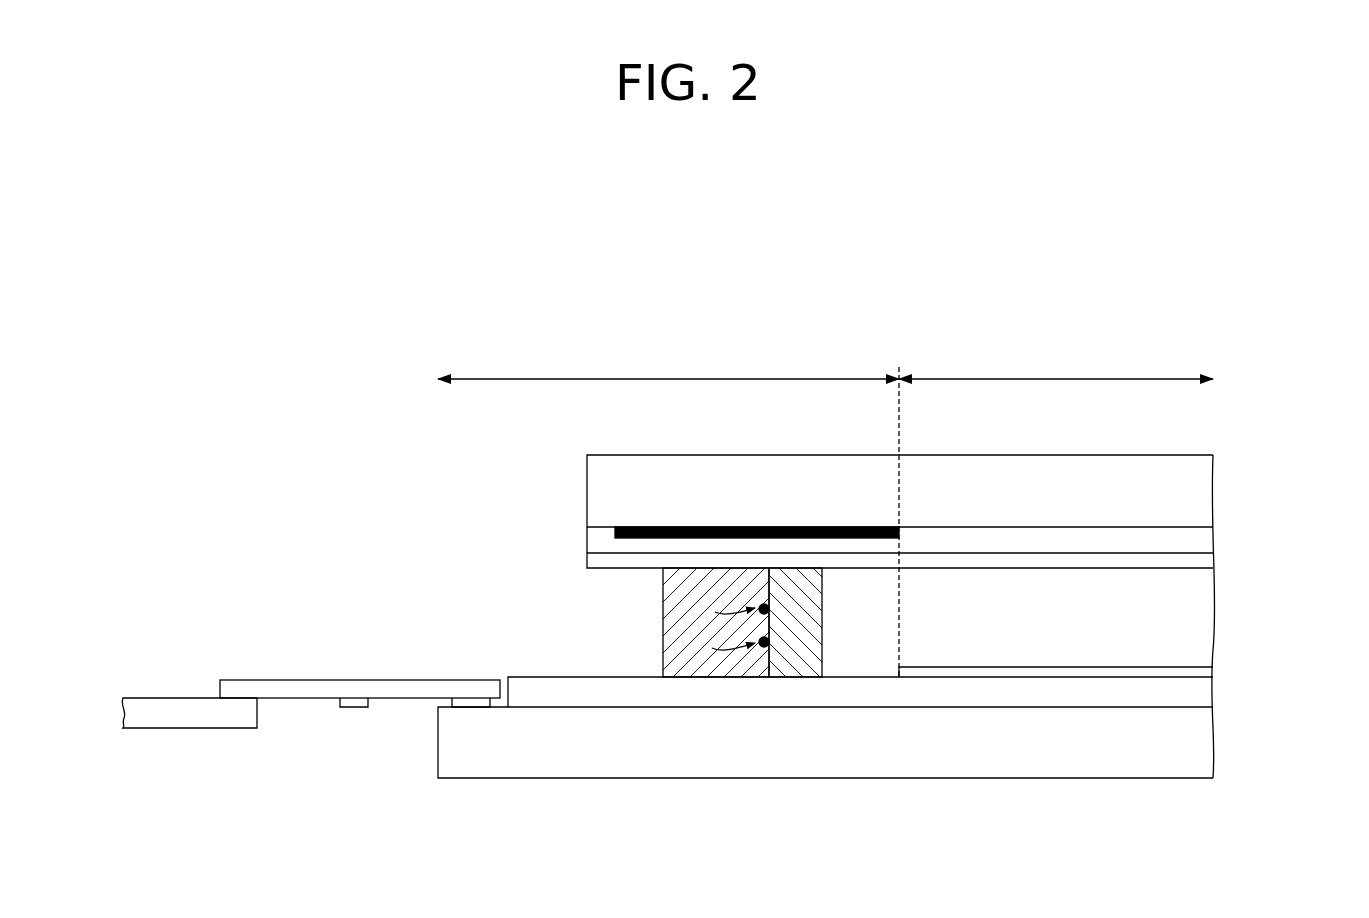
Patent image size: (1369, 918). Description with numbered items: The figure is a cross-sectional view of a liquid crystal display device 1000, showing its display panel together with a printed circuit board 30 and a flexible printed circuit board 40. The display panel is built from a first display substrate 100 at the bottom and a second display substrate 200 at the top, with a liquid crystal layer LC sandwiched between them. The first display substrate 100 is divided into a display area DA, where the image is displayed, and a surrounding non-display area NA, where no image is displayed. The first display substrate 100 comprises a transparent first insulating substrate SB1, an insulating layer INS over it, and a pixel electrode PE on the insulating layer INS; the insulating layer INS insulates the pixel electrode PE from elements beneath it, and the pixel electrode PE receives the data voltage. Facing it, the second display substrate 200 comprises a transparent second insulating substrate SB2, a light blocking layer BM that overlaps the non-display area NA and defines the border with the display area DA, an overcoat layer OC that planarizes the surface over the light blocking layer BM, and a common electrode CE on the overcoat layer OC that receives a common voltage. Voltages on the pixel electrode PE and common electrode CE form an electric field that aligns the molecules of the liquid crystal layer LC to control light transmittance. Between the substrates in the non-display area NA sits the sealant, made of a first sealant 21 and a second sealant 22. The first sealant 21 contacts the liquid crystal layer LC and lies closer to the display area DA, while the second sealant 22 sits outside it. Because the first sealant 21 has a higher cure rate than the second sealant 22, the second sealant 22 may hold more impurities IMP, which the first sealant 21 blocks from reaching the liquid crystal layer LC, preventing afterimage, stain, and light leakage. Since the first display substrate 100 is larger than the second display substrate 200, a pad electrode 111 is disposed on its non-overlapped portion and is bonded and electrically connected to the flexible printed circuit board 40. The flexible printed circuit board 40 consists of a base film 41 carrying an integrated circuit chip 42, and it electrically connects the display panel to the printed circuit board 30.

The liquid crystal display device 1000 is at (1196, 297).
The second display substrate 200 is at (1297, 467).
The first display substrate 100 is at (1297, 662).
The flexible printed circuit board 40 is at (282, 606).
The base film 41 is at (290, 688).
The integrated circuit chip 42 is at (352, 697).
The second sealant 22 is at (693, 667).
The first sealant 21 is at (797, 667).
The printed circuit board 30 is at (209, 730).
The pad electrode 111 is at (470, 703).
The light blocking layer BM is at (873, 527).
The second insulating substrate SB2 is at (1200, 508).
The overcoat layer OC is at (1200, 538).
The common electrode CE is at (1200, 565).
The liquid crystal layer LC is at (1200, 621).
The pixel electrode PE is at (1200, 668).
The insulating layer INS is at (1200, 697).
The first insulating substrate SB1 is at (1200, 740).
The impurities IMP is at (762, 607).
The non-display area NA is at (668, 513).
The display area DA is at (1056, 364).